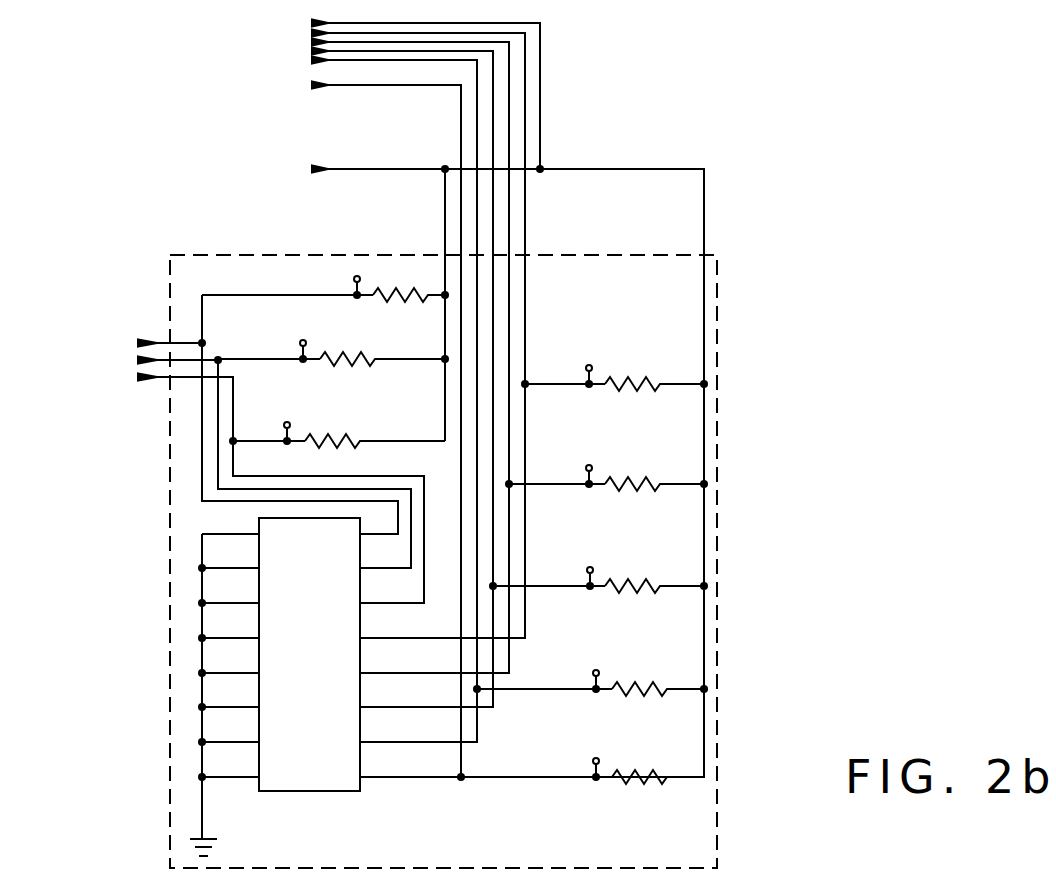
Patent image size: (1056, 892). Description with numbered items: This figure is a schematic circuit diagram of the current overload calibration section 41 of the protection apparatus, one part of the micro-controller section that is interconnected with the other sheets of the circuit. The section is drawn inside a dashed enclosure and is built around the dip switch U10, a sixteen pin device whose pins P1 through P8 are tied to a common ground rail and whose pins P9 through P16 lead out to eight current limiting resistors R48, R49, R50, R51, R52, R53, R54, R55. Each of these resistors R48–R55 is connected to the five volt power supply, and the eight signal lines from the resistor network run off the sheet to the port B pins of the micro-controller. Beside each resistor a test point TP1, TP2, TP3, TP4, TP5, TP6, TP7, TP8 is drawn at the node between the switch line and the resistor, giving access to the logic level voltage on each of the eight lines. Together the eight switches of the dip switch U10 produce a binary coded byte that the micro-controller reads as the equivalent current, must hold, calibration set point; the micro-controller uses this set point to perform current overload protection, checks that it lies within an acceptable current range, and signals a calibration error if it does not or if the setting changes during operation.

The current overload calibration section 41 is at (409, 517).
The dip switch U10 is at (309, 670).
The current limiting resistor R48 is at (658, 768).
The current limiting resistor R49 is at (658, 681).
The current limiting resistor R50 is at (654, 577).
The current limiting resistor R51 is at (654, 476).
The current limiting resistor R52 is at (654, 376).
The current limiting resistor R53 is at (409, 285).
The current limiting resistor R54 is at (382, 351).
The current limiting resistor R55 is at (375, 432).
The test point TP1 is at (337, 285).
The test point TP2 is at (283, 349).
The test point TP3 is at (282, 421).
The test point TP4 is at (585, 365).
The test point TP5 is at (585, 465).
The test point TP6 is at (585, 566).
The test point TP7 is at (590, 670).
The test point TP8 is at (590, 758).